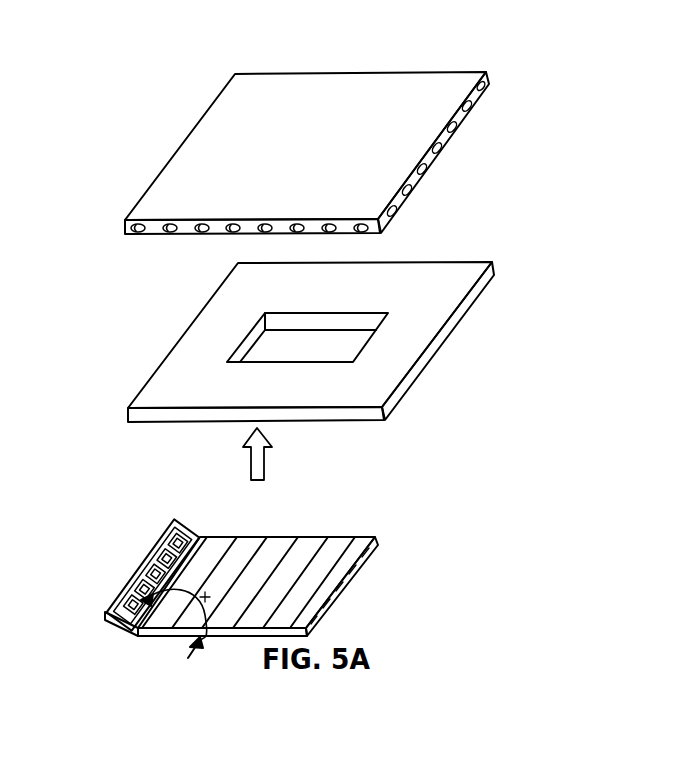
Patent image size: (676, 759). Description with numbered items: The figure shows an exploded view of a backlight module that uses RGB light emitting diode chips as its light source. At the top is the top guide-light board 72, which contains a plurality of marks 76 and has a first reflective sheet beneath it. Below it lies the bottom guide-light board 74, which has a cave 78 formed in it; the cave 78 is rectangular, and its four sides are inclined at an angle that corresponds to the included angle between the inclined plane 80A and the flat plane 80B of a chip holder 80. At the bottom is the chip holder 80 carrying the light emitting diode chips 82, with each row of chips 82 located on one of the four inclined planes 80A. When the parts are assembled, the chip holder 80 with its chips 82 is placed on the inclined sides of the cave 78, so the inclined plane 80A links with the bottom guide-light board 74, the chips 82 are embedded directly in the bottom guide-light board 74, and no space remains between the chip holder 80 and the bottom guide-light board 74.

The top guide-light board 72 is at (335, 153).
The bottom guide-light board 74 is at (333, 326).
The marks 76 is at (468, 112).
The cave 78 is at (310, 347).
The chip holder 80 is at (202, 558).
The inclined plane 80A is at (192, 530).
The flat plane 80B is at (228, 537).
The light emitting diode chips 82 is at (163, 547).